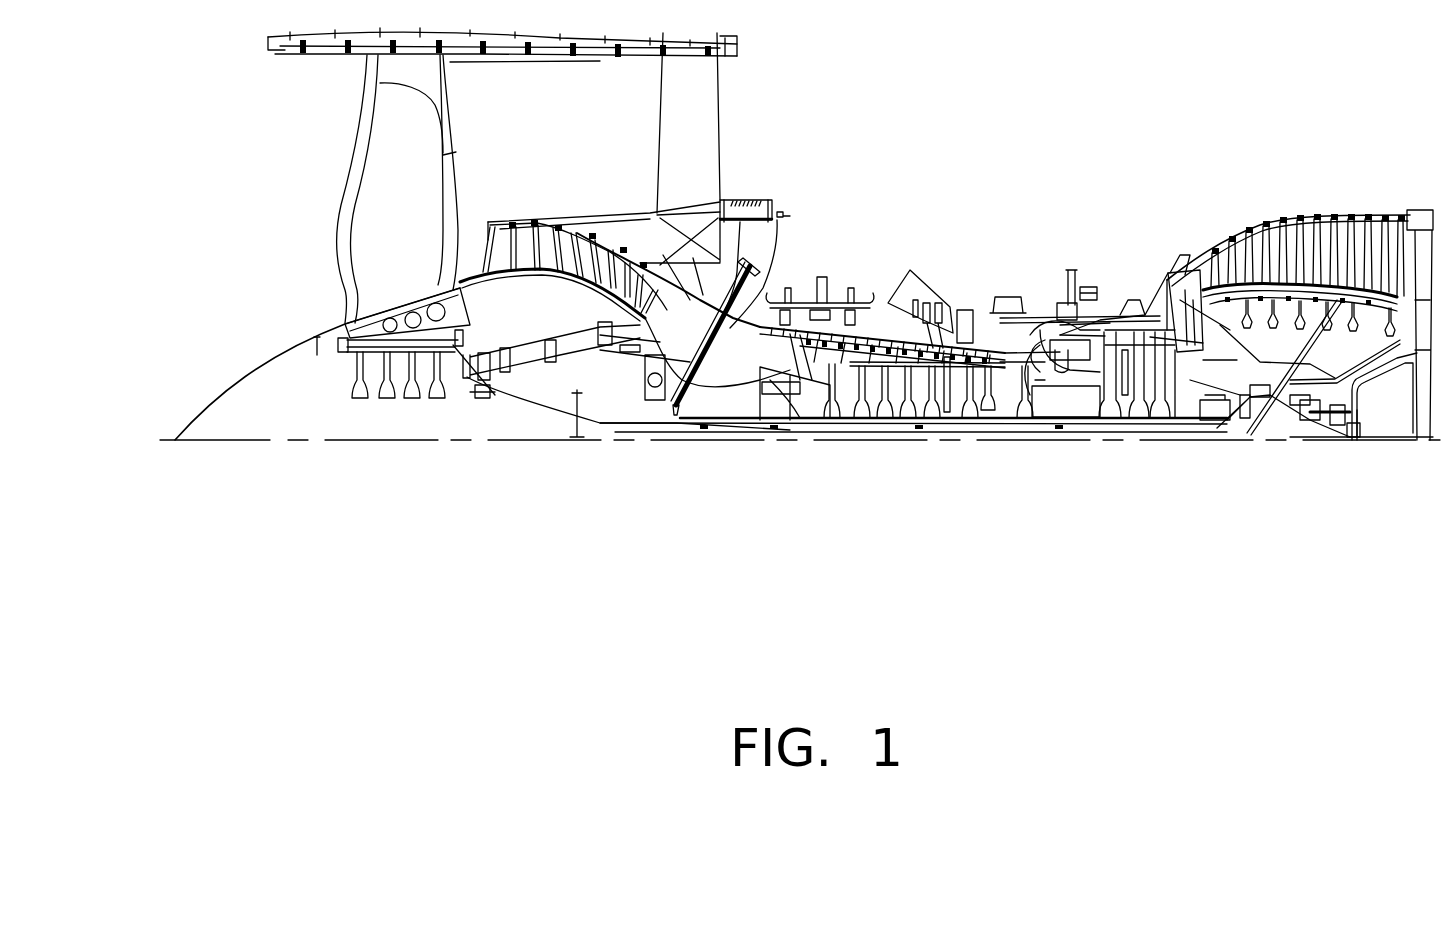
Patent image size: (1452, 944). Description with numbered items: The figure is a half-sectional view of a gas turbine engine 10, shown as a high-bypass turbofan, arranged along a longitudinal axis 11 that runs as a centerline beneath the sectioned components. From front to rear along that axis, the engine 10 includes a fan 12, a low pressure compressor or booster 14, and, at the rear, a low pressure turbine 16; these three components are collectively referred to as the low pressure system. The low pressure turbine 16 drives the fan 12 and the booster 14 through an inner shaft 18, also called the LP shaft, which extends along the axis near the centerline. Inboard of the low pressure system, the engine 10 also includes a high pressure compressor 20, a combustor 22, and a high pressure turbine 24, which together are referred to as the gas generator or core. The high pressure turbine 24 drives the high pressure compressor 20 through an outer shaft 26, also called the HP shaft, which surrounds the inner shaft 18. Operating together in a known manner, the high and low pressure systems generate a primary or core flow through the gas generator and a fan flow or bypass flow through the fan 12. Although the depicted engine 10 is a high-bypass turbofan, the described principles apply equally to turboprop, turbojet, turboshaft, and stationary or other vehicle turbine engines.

The gas turbine engine 10 is at (955, 108).
The longitudinal axis 11 is at (205, 445).
The fan 12 is at (400, 227).
The low pressure compressor 14 is at (503, 183).
The low pressure turbine 16 is at (1245, 218).
The inner shaft 18 is at (1215, 420).
The high pressure compressor 20 is at (918, 200).
The combustor 22 is at (1055, 300).
The high pressure turbine 24 is at (1127, 265).
The outer shaft 26 is at (1003, 415).